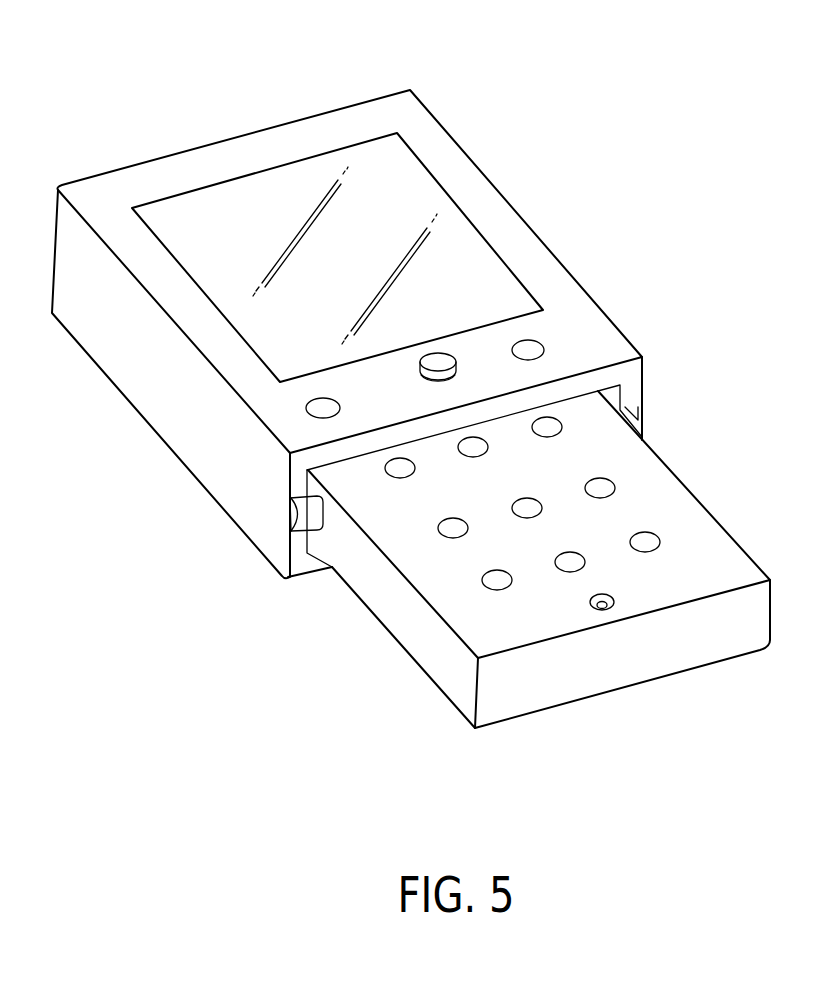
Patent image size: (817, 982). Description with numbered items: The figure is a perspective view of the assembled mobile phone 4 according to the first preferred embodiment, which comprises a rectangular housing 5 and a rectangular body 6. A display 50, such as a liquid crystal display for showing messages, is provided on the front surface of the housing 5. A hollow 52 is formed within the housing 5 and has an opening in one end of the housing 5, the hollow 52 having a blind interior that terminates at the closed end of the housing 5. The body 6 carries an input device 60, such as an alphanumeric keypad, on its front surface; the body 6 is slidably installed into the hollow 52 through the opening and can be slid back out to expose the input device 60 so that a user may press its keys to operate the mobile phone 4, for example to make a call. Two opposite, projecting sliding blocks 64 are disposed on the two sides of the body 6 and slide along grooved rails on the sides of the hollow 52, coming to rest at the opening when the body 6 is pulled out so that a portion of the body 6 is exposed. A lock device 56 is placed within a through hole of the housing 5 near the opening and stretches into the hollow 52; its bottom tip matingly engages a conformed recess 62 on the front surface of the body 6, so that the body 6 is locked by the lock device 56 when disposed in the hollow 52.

The mobile phone 4 is at (600, 194).
The housing 5 is at (453, 167).
The display 50 is at (223, 217).
The lock device 56 is at (437, 355).
The hollow 52 is at (332, 567).
The sliding blocks 64 is at (305, 515).
The body 6 is at (635, 460).
The input device 60 is at (645, 542).
The recess 62 is at (610, 598).